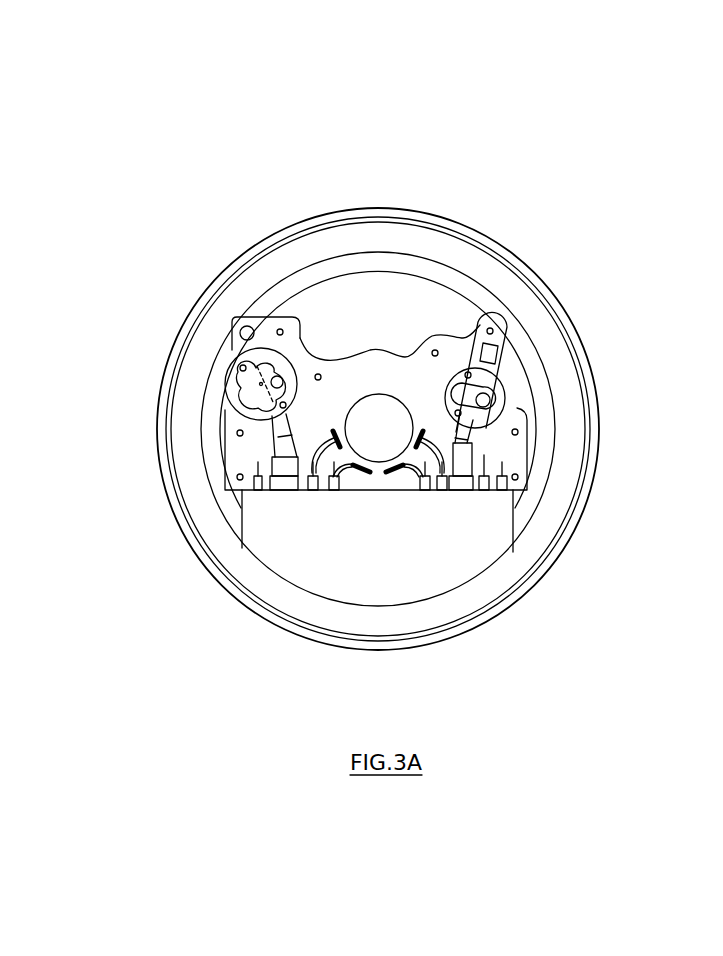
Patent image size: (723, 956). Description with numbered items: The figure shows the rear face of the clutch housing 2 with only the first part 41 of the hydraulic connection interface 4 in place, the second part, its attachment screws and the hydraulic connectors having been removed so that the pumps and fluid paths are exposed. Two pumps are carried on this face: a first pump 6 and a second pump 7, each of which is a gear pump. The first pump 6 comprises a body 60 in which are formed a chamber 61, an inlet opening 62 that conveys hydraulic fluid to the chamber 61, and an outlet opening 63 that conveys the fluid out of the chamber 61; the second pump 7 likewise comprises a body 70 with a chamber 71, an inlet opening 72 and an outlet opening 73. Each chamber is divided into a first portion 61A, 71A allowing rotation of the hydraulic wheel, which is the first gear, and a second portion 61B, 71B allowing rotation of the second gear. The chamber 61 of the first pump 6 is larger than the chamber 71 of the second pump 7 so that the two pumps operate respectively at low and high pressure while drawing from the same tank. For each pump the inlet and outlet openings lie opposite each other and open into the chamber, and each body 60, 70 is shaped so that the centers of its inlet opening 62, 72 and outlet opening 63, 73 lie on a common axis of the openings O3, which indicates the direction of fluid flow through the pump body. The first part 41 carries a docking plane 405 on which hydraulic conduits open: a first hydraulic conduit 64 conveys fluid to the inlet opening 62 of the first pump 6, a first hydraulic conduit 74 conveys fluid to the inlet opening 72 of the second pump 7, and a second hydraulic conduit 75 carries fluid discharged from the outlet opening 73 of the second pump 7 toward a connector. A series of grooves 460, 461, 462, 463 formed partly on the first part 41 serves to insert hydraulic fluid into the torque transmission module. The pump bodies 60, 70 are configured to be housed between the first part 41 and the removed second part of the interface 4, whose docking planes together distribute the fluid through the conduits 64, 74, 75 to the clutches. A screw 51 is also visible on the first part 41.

The clutch housing 2 is at (142, 172).
The hydraulic connection interface 4 is at (98, 321).
The first part of the hydraulic connection interface 41 is at (195, 390).
The docking plane of the first part 405 is at (388, 362).
The screw 51 is at (282, 326).
The first pump 6 is at (208, 348).
The body of the first pump 60 is at (255, 405).
The chamber of the first pump 61 is at (263, 422).
The first portion of the chamber of the first pump 61A is at (240, 380).
The second portion of the chamber of the first pump 61B is at (278, 370).
The inlet opening of the first pump 62 is at (274, 442).
The outlet opening of the first pump 63 is at (240, 382).
The first hydraulic conduit of the first pump 64 is at (284, 482).
The axis of the openings O3 is at (268, 392).
The second pump 7 is at (550, 361).
The body of the second pump 70 is at (490, 416).
The chamber of the second pump 71 is at (462, 392).
The first portion of the chamber of the second pump 71A is at (491, 401).
The second portion of the chamber of the second pump 71B is at (494, 315).
The inlet opening of the second pump 72 is at (466, 424).
The outlet opening of the second pump 73 is at (496, 384).
The first hydraulic conduit of the second pump 74 is at (465, 480).
The second hydraulic conduit 75 is at (512, 322).
The groove 460 is at (313, 480).
The groove 461 is at (334, 480).
The groove 462 is at (424, 480).
The groove 463 is at (441, 480).